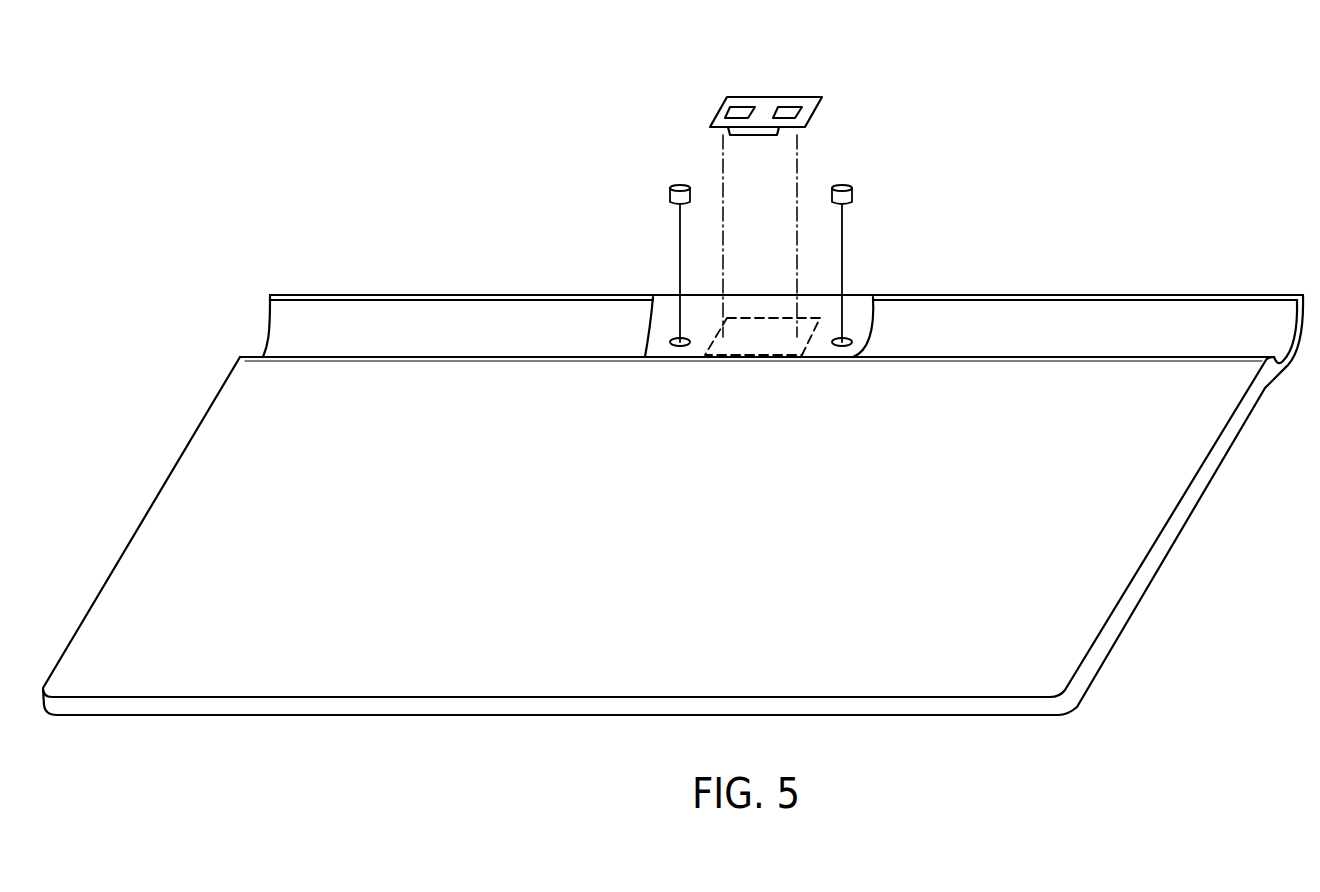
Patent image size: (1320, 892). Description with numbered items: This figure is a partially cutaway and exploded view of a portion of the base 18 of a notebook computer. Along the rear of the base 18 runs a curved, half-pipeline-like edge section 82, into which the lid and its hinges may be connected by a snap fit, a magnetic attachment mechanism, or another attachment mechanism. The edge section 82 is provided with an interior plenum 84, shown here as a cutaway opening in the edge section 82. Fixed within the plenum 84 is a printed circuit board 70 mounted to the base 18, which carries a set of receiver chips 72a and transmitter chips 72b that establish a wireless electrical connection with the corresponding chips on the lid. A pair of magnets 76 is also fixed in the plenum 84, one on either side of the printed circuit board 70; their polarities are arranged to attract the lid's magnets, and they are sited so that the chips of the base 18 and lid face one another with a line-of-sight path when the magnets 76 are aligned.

The base 18 is at (1093, 605).
The edge section 82 is at (1085, 313).
The interior plenum 84 is at (667, 307).
The printed circuit board 70 is at (752, 95).
The receiver chips 72a is at (737, 110).
The transmitter chips 72b is at (792, 102).
The magnets 76 is at (678, 186).